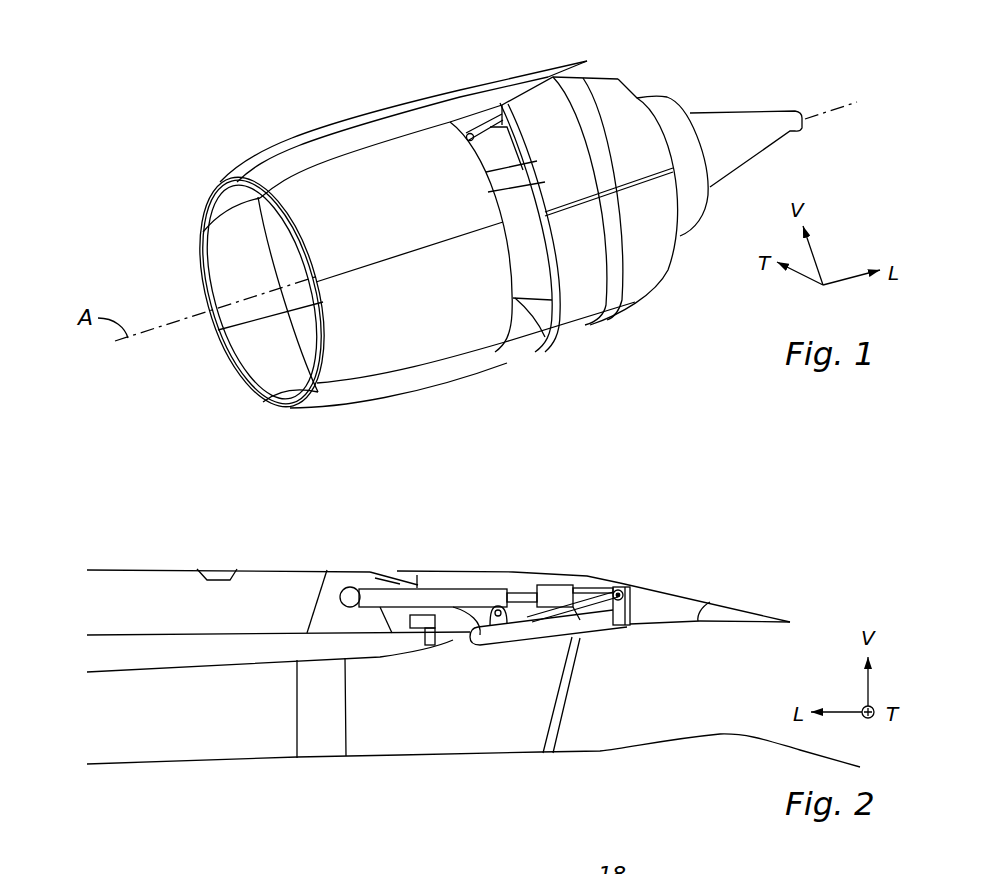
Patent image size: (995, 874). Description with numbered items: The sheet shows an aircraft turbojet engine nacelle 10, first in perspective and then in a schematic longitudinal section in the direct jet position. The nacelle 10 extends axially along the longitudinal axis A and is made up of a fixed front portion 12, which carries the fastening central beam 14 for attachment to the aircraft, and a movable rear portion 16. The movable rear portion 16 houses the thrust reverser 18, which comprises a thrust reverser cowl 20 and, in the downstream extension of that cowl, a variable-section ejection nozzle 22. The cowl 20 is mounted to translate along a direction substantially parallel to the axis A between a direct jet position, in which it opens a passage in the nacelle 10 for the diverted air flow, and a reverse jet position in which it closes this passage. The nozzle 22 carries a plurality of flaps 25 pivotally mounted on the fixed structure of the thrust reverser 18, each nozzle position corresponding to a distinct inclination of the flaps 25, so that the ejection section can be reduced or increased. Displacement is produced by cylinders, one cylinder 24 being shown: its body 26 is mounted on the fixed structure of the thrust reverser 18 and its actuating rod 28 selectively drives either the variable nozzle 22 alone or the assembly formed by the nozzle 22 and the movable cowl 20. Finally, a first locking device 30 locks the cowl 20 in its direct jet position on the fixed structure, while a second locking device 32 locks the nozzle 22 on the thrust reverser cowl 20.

In FIG. 1, the turbojet engine nacelle 10 is at (238, 78).
In FIG. 2, the turbojet engine nacelle 10 is at (210, 542).
In FIG. 1, the fixed front portion 12 is at (318, 118).
In FIG. 1, the fastening central beam 14 is at (352, 143).
In FIG. 1, the movable rear portion 16 is at (542, 130).
In FIG. 2, the movable rear portion 16 is at (677, 523).
In FIG. 1, the thrust reverser 18 is at (504, 167).
In FIG. 2, the thrust reverser 18 is at (462, 547).
In FIG. 1, the thrust reverser cowl 20 is at (560, 123).
In FIG. 2, the thrust reverser cowl 20 is at (490, 570).
In FIG. 1, the variable-section ejection nozzle 22 is at (627, 108).
In FIG. 2, the variable-section ejection nozzle 22 is at (693, 593).
In FIG. 2, the cylinder 24 is at (383, 578).
In FIG. 2, the flaps 25 is at (763, 607).
In FIG. 2, the body 26 is at (433, 588).
In FIG. 2, the actuating rod 28 is at (520, 583).
In FIG. 2, the first locking device 30 is at (420, 622).
In FIG. 2, the second locking device 32 is at (555, 580).